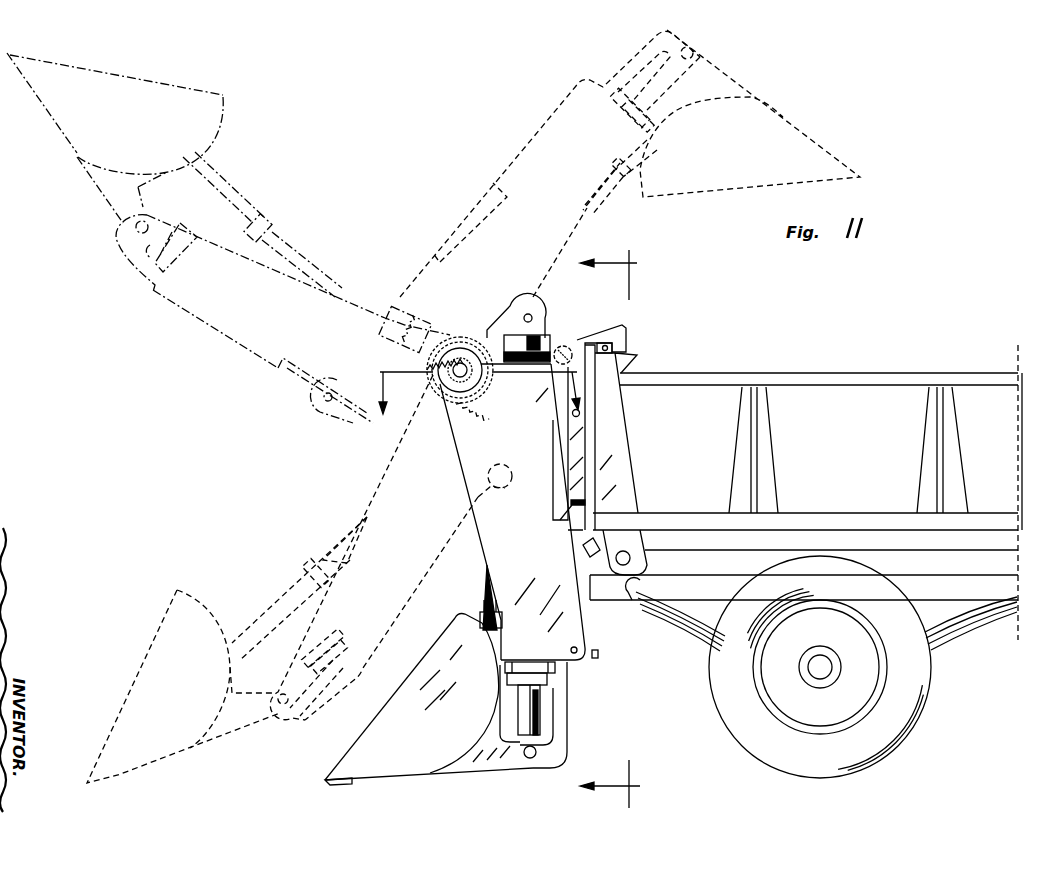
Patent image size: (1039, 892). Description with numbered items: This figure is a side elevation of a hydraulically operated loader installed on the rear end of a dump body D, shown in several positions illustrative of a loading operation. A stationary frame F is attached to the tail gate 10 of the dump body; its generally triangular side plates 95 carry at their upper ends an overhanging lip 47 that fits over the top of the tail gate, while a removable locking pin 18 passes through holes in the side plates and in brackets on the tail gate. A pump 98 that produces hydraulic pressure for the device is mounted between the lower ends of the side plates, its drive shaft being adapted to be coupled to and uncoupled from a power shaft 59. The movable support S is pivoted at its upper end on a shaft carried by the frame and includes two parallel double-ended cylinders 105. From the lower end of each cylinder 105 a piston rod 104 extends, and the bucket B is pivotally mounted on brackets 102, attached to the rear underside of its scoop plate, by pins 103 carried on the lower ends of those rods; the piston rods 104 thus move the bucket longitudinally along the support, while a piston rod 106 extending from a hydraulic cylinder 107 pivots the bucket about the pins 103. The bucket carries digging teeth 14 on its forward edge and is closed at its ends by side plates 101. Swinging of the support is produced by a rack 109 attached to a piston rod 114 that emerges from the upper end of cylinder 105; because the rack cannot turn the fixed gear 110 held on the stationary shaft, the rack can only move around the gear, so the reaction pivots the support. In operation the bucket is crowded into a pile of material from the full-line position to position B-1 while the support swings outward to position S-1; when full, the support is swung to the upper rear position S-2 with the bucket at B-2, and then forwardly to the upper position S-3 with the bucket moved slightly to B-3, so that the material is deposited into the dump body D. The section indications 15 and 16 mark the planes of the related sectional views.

The upper rear position of movable support S-2 is at (205, 335).
The bucket position corresponding to S'-2 B-2 is at (170, 87).
The forward upper position of movable support S-3 is at (573, 229).
The bucket dumping position B-3 is at (797, 123).
The outward position of movable support S-1 is at (385, 478).
The crowding position of bucket B-1 is at (166, 631).
The movable support S is at (521, 547).
The double-ended cylinder 105 is at (547, 641).
The fixed gear 110 is at (452, 345).
The side plate 95 is at (572, 347).
The rack 109 is at (510, 320).
The piston rod 114 is at (535, 340).
The hydraulic cylinder 107 is at (487, 590).
The piston rod 106 is at (484, 620).
The piston rod 104 is at (528, 719).
The bracket 102 is at (508, 762).
The pin 103 is at (529, 760).
The bucket B is at (423, 709).
The side plate 101 is at (415, 739).
The digging teeth 14 is at (332, 782).
The stationary frame F is at (628, 320).
The overhanging lip 47 is at (614, 340).
The tail gate 10 is at (592, 453).
The pump 98 is at (580, 503).
The locking pin 18 is at (580, 411).
The power shaft 59 is at (600, 546).
The section line 15- 15 is at (479, 394).
The section line 16- 16 is at (610, 529).
The dump body D is at (870, 373).